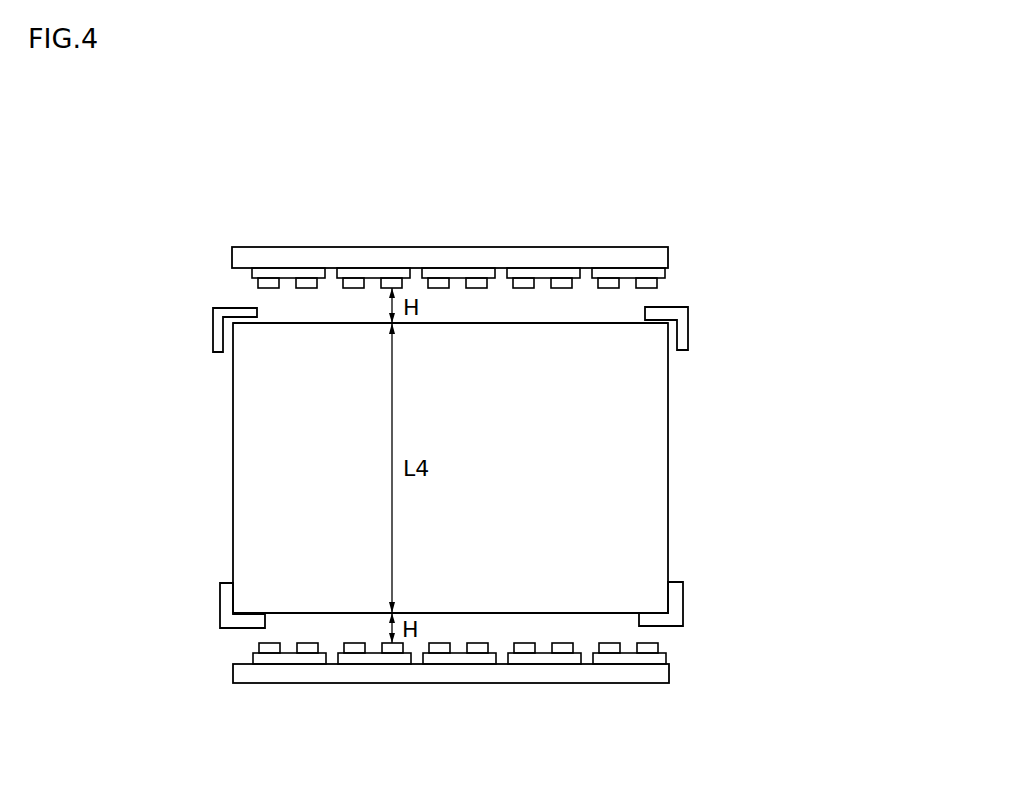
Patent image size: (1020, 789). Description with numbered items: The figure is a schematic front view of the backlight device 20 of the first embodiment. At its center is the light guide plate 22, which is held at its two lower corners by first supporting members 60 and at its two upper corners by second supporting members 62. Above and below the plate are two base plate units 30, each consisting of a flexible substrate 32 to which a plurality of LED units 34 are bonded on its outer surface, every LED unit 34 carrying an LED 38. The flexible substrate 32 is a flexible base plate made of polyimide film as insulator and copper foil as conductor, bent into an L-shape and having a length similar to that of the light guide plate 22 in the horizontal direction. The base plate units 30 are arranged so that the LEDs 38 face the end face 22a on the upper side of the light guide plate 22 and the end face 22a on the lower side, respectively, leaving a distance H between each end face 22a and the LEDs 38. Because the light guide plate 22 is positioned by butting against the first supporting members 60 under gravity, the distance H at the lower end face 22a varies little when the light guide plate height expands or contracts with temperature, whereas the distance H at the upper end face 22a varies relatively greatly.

The backlight device 20 is at (460, 441).
The light guide plate 22 is at (668, 456).
The end face 22a is at (617, 323).
The base plate unit 30 is at (422, 471).
The flexible substrate 32 is at (584, 247).
The LED unit 34 is at (252, 273).
The LED 38 is at (303, 288).
The first supporting member 60 is at (221, 592).
The second supporting member 62 is at (213, 325).